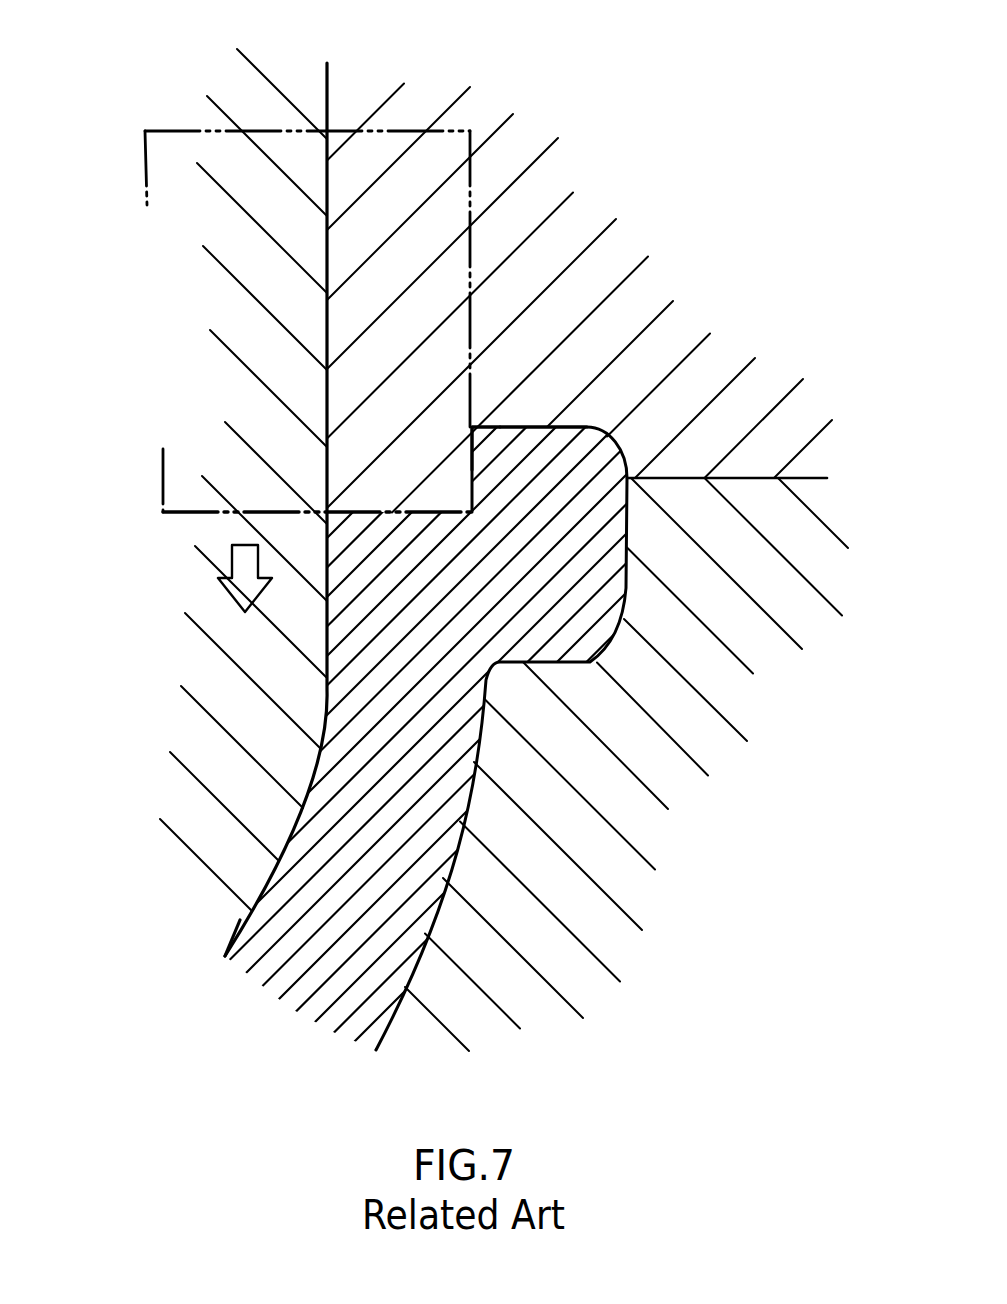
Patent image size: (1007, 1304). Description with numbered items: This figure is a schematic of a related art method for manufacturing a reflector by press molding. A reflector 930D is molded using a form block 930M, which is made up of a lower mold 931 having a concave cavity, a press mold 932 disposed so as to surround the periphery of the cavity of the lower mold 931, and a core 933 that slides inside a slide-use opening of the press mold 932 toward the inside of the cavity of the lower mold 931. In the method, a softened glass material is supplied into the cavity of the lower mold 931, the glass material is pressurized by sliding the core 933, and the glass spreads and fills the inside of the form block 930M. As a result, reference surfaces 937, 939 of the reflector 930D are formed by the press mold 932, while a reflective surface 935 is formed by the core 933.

The form block 930M is at (698, 203).
The reflector 930D is at (393, 928).
The lower mold 931 is at (650, 737).
The press mold 932 is at (737, 432).
The core 933 is at (217, 755).
The reflective surface 935 is at (224, 940).
The reference surface 937 is at (537, 424).
The reference surface 939 is at (397, 505).